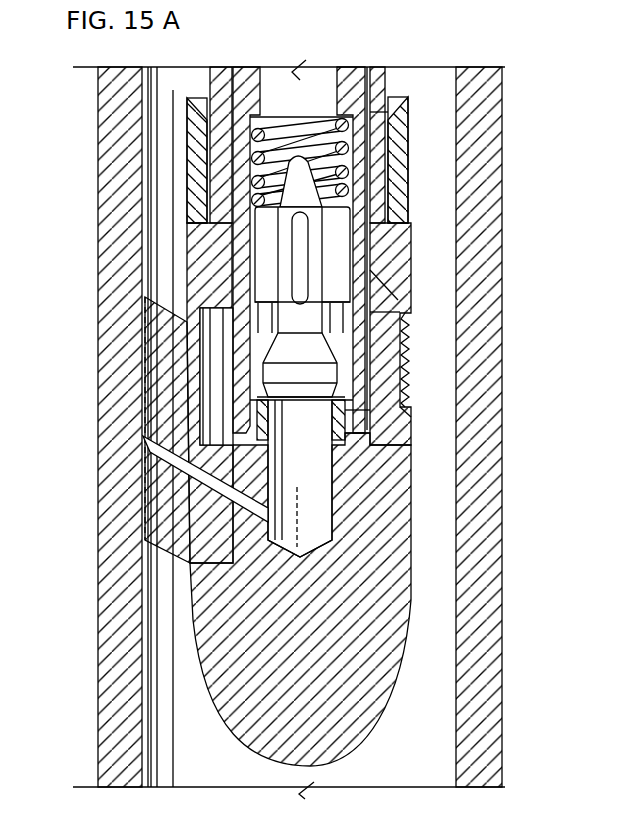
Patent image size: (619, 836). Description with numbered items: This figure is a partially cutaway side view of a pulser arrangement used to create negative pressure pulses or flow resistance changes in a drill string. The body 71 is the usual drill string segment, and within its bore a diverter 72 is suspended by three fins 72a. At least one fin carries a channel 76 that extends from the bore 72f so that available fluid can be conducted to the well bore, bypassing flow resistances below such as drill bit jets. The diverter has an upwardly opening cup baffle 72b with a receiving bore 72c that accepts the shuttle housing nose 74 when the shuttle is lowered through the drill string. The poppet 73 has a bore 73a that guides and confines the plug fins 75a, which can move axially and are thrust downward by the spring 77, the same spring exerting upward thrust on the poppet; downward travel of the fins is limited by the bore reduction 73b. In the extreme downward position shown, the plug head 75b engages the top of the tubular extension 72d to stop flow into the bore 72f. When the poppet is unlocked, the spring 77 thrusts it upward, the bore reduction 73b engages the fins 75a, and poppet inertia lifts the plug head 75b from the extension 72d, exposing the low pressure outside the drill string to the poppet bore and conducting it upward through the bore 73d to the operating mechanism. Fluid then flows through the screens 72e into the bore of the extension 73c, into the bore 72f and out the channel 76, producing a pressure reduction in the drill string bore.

The body 71 is at (98, 148).
The diverter 72 is at (422, 528).
The fins 72a is at (160, 353).
The cup baffle 72b is at (187, 212).
The receiving bore 72c is at (392, 196).
The tubular extension 72d is at (336, 420).
The screens 72e is at (413, 403).
The bore 72f is at (313, 468).
The poppet 73 is at (232, 293).
The bore 73a is at (372, 297).
The bore reduction 73b is at (365, 322).
The extension 73c is at (362, 410).
The bore 73d is at (320, 101).
The shuttle housing nose 74 is at (365, 162).
The plug fins 75a is at (340, 263).
The plug head 75b is at (347, 378).
The channel 76 is at (143, 436).
The spring 77 is at (387, 112).